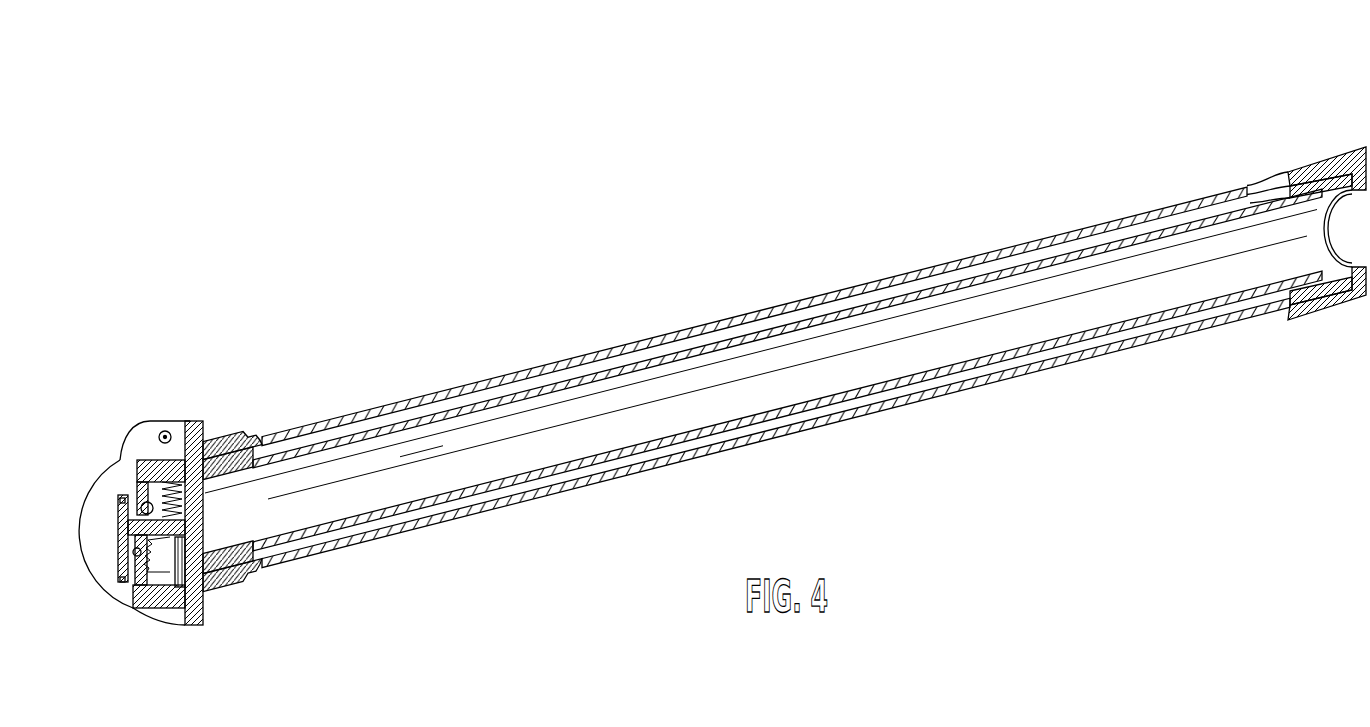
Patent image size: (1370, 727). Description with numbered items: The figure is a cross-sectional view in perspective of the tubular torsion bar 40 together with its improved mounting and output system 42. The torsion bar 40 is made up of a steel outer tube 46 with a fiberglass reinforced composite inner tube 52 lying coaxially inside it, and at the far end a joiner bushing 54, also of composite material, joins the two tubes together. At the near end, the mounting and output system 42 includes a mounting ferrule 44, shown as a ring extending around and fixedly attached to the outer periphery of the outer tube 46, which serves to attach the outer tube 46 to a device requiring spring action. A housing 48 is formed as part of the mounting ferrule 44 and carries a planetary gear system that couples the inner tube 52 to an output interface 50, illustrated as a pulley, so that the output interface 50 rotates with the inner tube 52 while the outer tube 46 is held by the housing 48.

The tubular torsion bar 40 is at (881, 146).
The mounting and output system 42 is at (195, 388).
The mounting ferrule 44 is at (200, 419).
The outer tube 46 is at (823, 296).
The housing 48 is at (133, 451).
The output interface 50 is at (108, 566).
The inner tube 52 is at (910, 298).
The joiner bushing 54 is at (1329, 132).